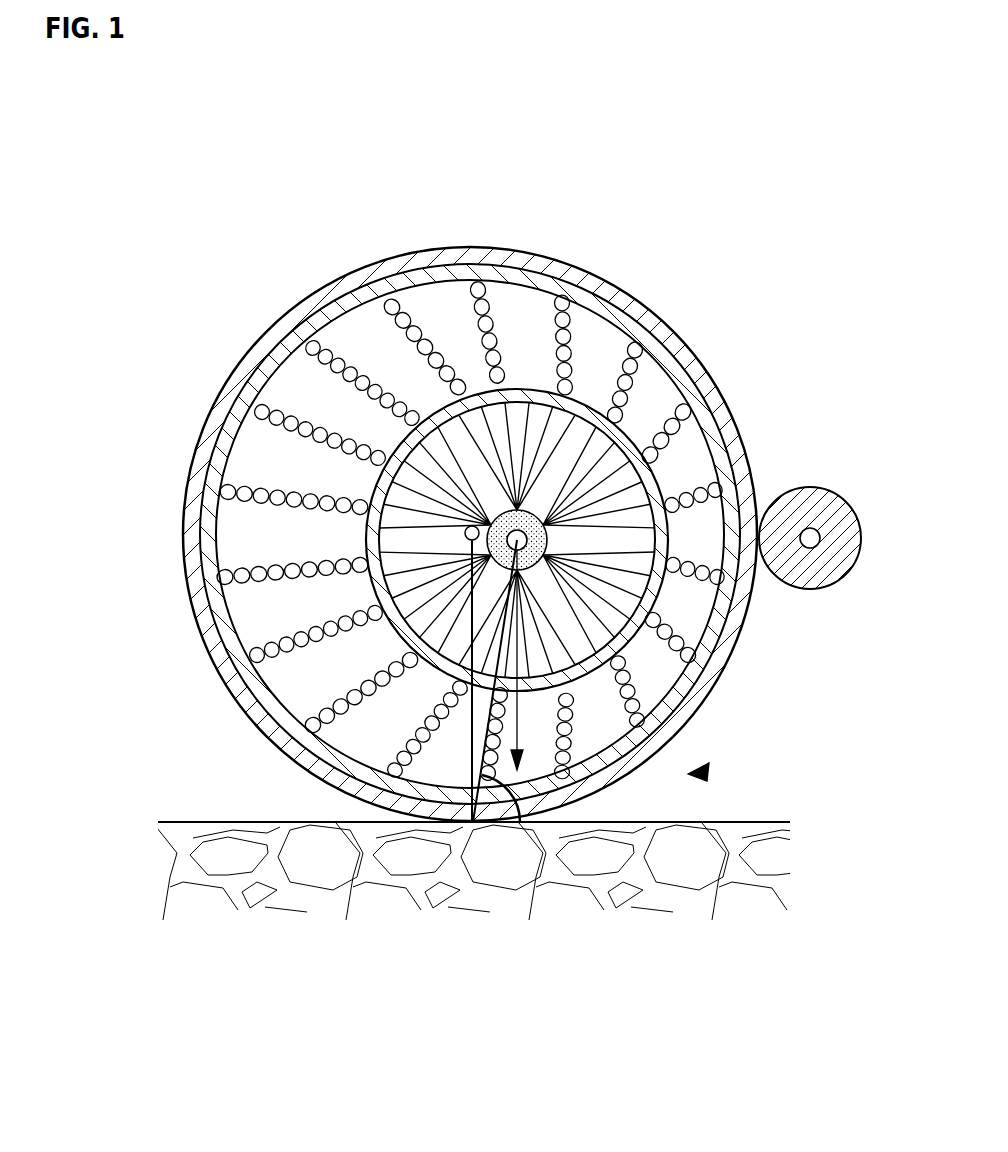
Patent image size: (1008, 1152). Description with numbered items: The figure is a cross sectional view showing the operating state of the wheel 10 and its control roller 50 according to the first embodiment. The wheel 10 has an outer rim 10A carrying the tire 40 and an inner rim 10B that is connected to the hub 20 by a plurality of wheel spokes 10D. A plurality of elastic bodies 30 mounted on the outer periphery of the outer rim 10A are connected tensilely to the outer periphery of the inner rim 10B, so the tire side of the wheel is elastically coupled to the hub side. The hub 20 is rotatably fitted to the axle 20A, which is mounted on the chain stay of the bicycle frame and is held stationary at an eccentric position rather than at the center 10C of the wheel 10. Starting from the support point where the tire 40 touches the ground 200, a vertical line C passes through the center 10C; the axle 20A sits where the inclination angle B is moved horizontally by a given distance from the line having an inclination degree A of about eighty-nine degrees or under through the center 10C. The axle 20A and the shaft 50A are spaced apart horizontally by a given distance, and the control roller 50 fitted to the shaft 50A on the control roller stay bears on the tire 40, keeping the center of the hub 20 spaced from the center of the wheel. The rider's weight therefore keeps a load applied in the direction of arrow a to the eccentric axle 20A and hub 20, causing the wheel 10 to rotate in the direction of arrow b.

The wheel 10 is at (417, 485).
The outer rim of the wheel 10A is at (272, 638).
The inner rim of the wheel 10B is at (373, 465).
The center of the wheel 10C is at (490, 521).
The wheel spoke 10D is at (490, 450).
The hub 20 is at (579, 488).
The axle 20A is at (527, 530).
The elastic body 30 is at (250, 410).
The tire 40 is at (252, 702).
The control roller 50 is at (810, 557).
The shaft 50A is at (812, 532).
The ground 200 is at (722, 821).
The inclination degree A is at (487, 727).
The inclination angle B is at (518, 822).
The vertical line C is at (472, 692).
The load application a is at (562, 823).
The rotation direction of wheel 10 b is at (775, 650).